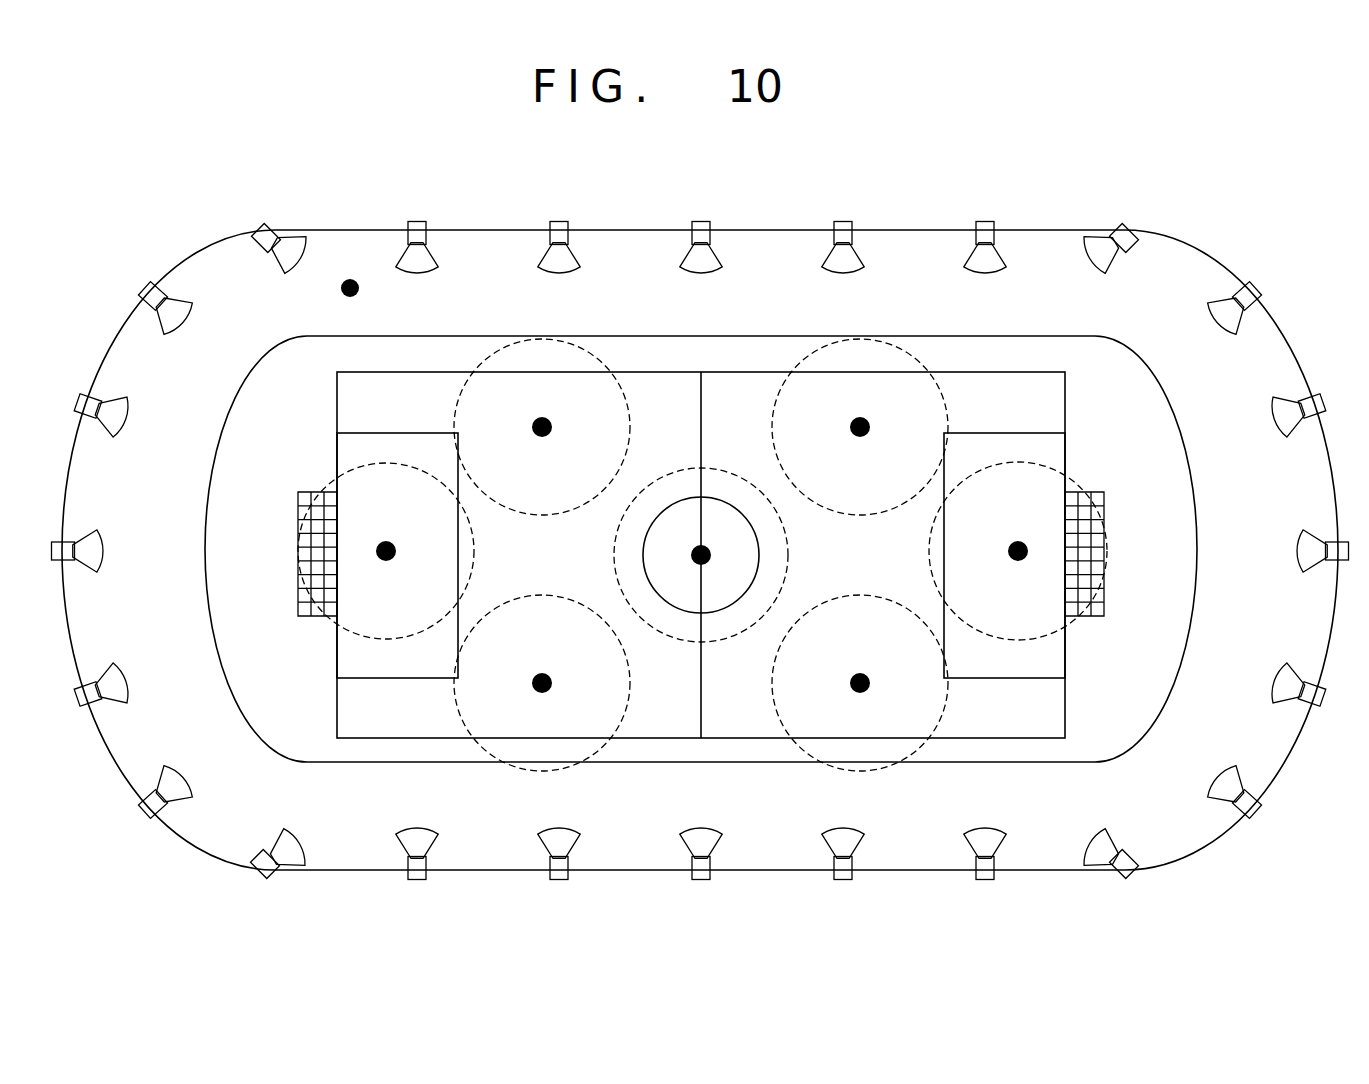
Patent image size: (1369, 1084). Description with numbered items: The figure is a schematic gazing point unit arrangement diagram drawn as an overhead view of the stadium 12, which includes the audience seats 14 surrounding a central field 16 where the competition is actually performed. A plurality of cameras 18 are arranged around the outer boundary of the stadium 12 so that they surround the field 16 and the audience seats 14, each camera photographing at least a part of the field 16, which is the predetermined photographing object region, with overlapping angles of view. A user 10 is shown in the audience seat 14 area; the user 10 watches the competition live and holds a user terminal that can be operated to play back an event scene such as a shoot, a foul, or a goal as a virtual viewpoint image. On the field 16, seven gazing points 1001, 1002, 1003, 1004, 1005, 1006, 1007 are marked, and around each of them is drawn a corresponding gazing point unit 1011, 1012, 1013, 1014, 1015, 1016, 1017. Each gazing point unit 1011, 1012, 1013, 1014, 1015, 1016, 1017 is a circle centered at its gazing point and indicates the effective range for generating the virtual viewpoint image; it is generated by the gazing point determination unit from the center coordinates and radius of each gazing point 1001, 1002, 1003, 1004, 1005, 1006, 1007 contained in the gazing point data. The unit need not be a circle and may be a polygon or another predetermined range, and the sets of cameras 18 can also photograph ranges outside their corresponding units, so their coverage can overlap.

The user 10 is at (350, 276).
The stadium 12 is at (773, 230).
The audience seats 14 is at (700, 517).
The field 16 is at (1197, 490).
The cameras 18 is at (701, 881).
The gazing point 1001 is at (386, 541).
The gazing point 1002 is at (542, 438).
The gazing point 1003 is at (542, 672).
The gazing point 1004 is at (691, 553).
The gazing point 1005 is at (861, 437).
The gazing point 1006 is at (860, 672).
The gazing point 1007 is at (1018, 541).
The gazing point unit 1011 is at (354, 470).
The gazing point unit 1012 is at (455, 399).
The gazing point unit 1013 is at (455, 712).
The gazing point unit 1014 is at (788, 555).
The gazing point unit 1015 is at (945, 395).
The gazing point unit 1016 is at (945, 712).
The gazing point unit 1017 is at (1043, 464).